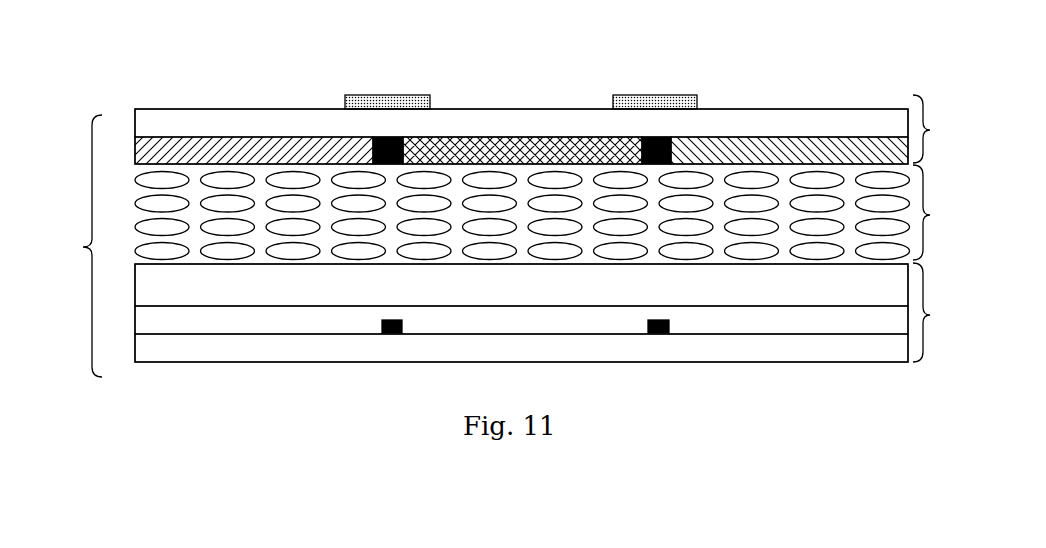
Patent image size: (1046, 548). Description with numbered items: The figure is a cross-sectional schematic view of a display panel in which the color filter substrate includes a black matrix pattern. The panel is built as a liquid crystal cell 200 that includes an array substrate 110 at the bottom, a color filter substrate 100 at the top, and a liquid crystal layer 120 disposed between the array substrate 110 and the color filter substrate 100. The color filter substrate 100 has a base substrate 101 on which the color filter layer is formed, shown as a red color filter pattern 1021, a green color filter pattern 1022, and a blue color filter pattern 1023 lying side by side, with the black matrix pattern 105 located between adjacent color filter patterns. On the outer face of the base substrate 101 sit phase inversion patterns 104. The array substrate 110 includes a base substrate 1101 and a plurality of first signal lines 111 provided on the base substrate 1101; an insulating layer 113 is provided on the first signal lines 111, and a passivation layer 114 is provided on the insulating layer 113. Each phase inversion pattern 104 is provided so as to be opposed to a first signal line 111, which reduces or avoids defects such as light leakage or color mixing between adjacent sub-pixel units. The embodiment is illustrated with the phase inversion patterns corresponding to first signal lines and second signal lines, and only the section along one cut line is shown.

The liquid crystal cell 200 is at (73, 246).
The color filter substrate 100 is at (549, 129).
The base substrate 101 is at (833, 125).
The red color filter pattern 1021 is at (188, 145).
The green color filter pattern 1022 is at (485, 145).
The blue color filter pattern 1023 is at (753, 143).
The black matrix pattern 105 is at (672, 142).
The phase inversion pattern 104 is at (392, 94).
The liquid crystal layer 120 is at (549, 212).
The array substrate 110 is at (549, 312).
The passivation layer 114 is at (517, 283).
The insulating layer 113 is at (220, 320).
The first signal line 111 is at (393, 335).
The base substrate 1101 is at (815, 347).